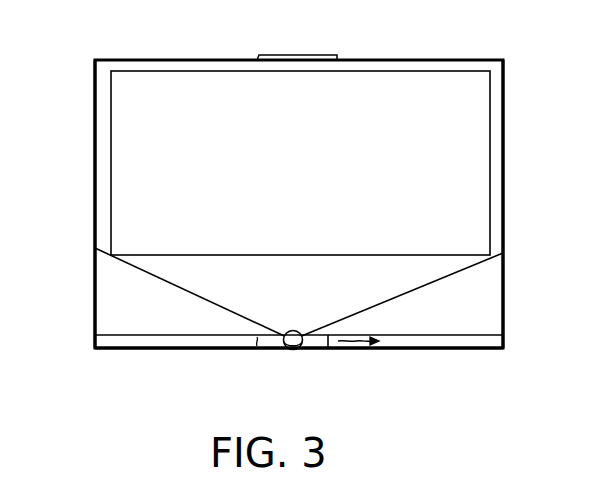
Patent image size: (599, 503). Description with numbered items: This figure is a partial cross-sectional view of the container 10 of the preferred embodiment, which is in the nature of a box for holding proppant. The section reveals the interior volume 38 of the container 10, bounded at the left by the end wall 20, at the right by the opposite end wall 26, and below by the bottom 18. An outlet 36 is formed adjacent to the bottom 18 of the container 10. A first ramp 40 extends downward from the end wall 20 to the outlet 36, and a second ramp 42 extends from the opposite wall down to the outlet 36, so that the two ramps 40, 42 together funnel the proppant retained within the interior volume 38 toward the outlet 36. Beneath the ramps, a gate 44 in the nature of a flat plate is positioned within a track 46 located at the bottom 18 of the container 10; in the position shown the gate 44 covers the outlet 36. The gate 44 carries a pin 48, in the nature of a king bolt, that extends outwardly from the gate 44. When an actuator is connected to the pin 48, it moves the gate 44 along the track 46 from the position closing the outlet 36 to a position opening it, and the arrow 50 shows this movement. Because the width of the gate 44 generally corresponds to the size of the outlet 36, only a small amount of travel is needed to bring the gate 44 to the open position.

The container 10 is at (396, 33).
The bottom 18 is at (432, 348).
The end wall 20 is at (94, 183).
The end wall 26 is at (504, 228).
The outlet 36 is at (295, 331).
The interior volume 38 is at (478, 162).
The first ramp 40 is at (210, 301).
The second ramp 42 is at (388, 300).
The gate 44 is at (264, 347).
The track 46 is at (173, 347).
The pin 48 is at (290, 349).
The arrow 50 is at (357, 347).